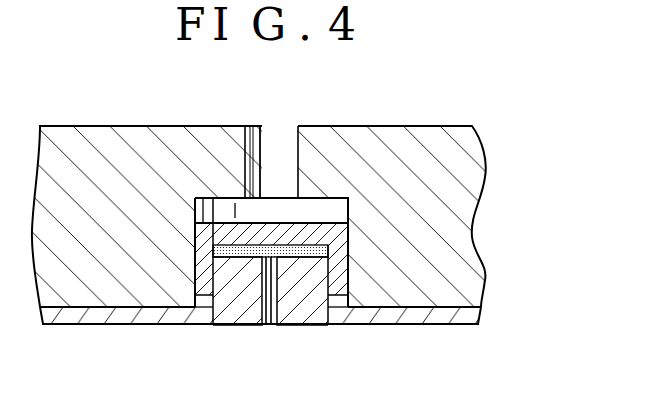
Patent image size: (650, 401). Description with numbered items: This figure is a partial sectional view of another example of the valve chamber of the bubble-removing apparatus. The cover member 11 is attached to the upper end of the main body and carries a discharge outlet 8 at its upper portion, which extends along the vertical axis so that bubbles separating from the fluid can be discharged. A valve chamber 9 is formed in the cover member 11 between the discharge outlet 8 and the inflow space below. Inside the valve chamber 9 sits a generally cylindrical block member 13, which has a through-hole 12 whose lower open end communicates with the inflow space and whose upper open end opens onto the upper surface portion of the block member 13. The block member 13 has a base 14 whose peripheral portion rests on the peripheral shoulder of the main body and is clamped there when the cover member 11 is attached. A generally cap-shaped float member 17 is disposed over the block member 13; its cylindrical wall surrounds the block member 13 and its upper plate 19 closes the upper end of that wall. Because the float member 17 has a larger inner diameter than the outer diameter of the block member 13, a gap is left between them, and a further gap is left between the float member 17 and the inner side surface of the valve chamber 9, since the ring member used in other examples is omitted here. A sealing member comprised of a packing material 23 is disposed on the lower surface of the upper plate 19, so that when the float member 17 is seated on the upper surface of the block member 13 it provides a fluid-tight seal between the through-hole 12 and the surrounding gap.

The discharge outlet 8 is at (290, 143).
The valve chamber 9 is at (223, 210).
The cover member 11 is at (450, 152).
The through-hole 12 is at (265, 327).
The block member 13 is at (228, 300).
The base 14 is at (380, 317).
The float member 17 is at (302, 233).
The upper plate 19 is at (323, 224).
The packing material 23 is at (270, 252).